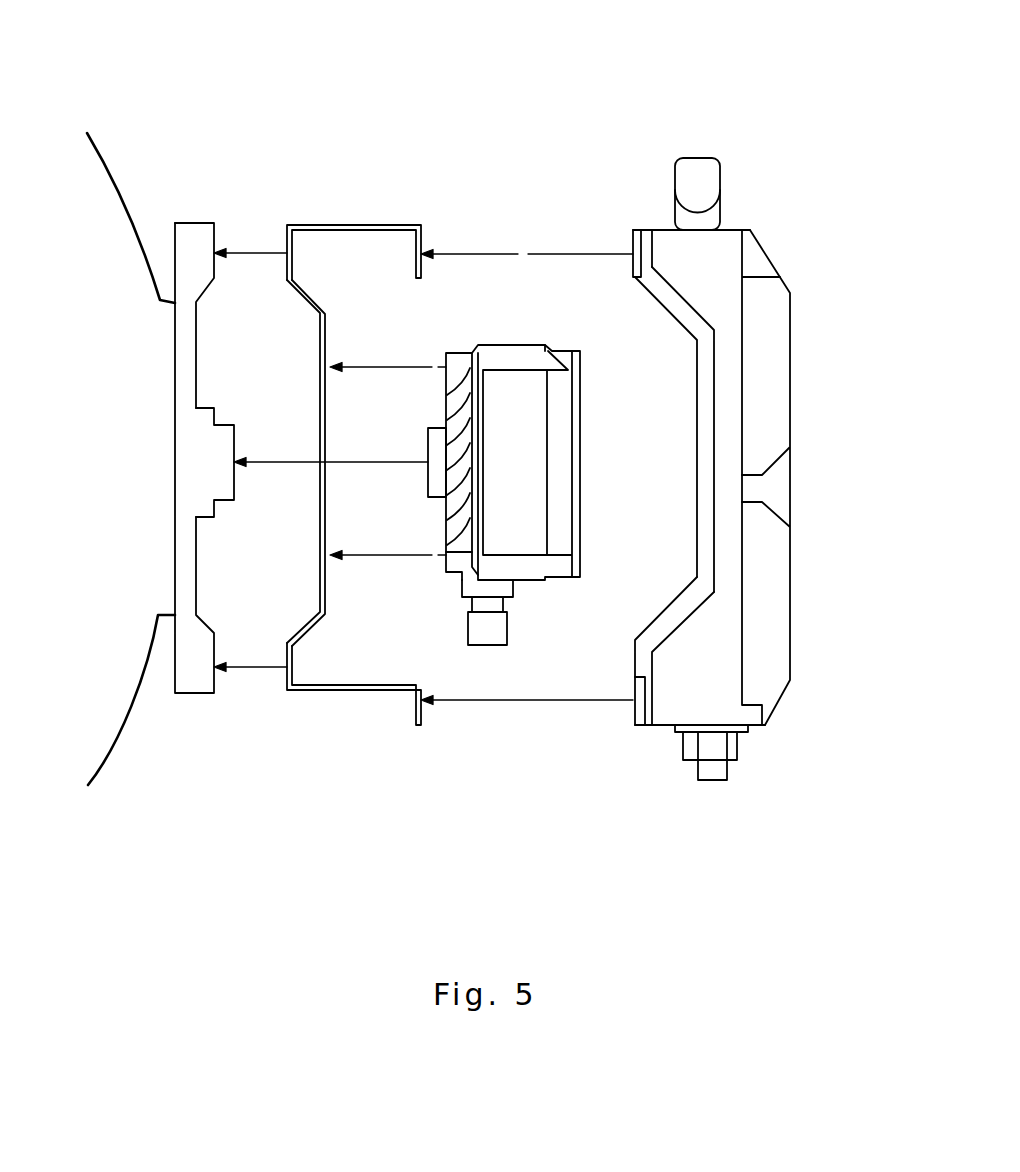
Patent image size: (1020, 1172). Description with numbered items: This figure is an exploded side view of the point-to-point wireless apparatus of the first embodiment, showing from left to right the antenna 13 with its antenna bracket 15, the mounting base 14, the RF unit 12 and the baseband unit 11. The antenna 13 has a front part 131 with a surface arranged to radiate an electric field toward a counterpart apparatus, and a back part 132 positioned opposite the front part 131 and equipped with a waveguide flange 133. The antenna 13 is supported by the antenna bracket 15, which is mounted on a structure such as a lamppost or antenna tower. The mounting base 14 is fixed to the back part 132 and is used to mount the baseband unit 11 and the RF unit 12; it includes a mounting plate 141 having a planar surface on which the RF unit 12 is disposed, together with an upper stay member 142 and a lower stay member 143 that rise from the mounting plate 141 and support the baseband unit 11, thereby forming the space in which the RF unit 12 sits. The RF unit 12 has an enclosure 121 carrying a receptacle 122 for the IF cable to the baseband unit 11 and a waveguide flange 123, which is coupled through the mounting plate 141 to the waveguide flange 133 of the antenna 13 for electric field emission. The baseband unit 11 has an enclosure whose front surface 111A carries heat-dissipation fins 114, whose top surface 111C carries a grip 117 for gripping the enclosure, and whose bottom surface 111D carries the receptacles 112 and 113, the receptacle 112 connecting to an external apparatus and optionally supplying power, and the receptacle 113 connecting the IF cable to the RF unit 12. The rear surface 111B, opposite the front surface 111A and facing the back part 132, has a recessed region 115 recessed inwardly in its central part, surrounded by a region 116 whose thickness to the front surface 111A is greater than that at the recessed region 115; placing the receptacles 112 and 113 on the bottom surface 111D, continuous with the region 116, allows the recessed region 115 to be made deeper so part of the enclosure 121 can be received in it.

The baseband unit 11 is at (722, 470).
The front surface 111A is at (745, 366).
The rear surface 111B is at (660, 302).
The top surface 111C is at (733, 230).
The bottom surface 111D is at (662, 727).
The receptacle 112 is at (740, 750).
The receptacle 113 is at (710, 782).
The heat-dissipation fins 114 is at (790, 598).
The recessed region 115 is at (673, 472).
The region 116 is at (652, 660).
The grip 117 is at (690, 158).
The RF unit 12 is at (471, 457).
The enclosure 121 is at (498, 345).
The receptacle 122 is at (481, 648).
The waveguide flange 123 is at (428, 448).
The antenna 13 is at (126, 409).
The front part 131 is at (138, 224).
The back part 132 is at (117, 175).
The waveguide flange 133 is at (222, 425).
The mounting base 14 is at (365, 465).
The mounting plate 141 is at (332, 515).
The upper stay member 142 is at (378, 224).
The lower stay member 143 is at (347, 690).
The antenna bracket 15 is at (156, 422).